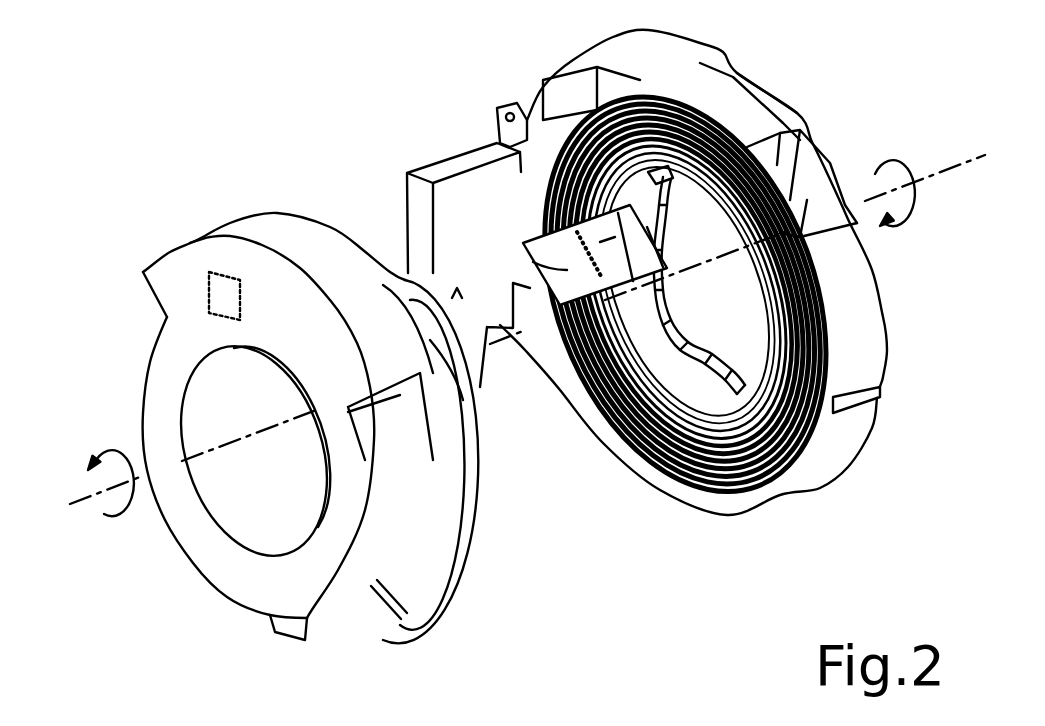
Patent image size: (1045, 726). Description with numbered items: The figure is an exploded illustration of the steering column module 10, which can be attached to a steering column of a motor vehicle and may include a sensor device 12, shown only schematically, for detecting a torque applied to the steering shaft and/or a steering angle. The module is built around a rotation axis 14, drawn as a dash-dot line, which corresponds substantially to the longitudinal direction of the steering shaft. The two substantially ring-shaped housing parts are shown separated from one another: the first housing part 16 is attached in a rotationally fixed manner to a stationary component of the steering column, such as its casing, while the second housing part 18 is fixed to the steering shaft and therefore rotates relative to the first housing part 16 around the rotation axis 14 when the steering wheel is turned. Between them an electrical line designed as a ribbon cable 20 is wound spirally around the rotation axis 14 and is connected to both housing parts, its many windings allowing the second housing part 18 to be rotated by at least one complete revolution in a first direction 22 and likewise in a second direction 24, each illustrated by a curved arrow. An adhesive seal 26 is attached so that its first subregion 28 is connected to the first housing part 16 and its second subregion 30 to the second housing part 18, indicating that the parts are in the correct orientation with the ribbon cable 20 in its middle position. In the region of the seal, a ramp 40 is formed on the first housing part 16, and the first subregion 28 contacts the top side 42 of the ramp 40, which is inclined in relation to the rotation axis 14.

The steering column module 10 is at (229, 137).
The sensor device 12 is at (221, 293).
The rotation axis 14 is at (946, 171).
The first housing part 16 is at (748, 95).
The second housing part 18 is at (291, 230).
The ribbon cable 20 is at (664, 462).
The first direction 22 is at (875, 174).
The second direction 24 is at (122, 452).
The adhesive seal 26 is at (604, 232).
The first subregion 28 is at (620, 264).
The second subregion 30 is at (533, 262).
The ramp 40 is at (780, 165).
The top side 42 is at (797, 195).